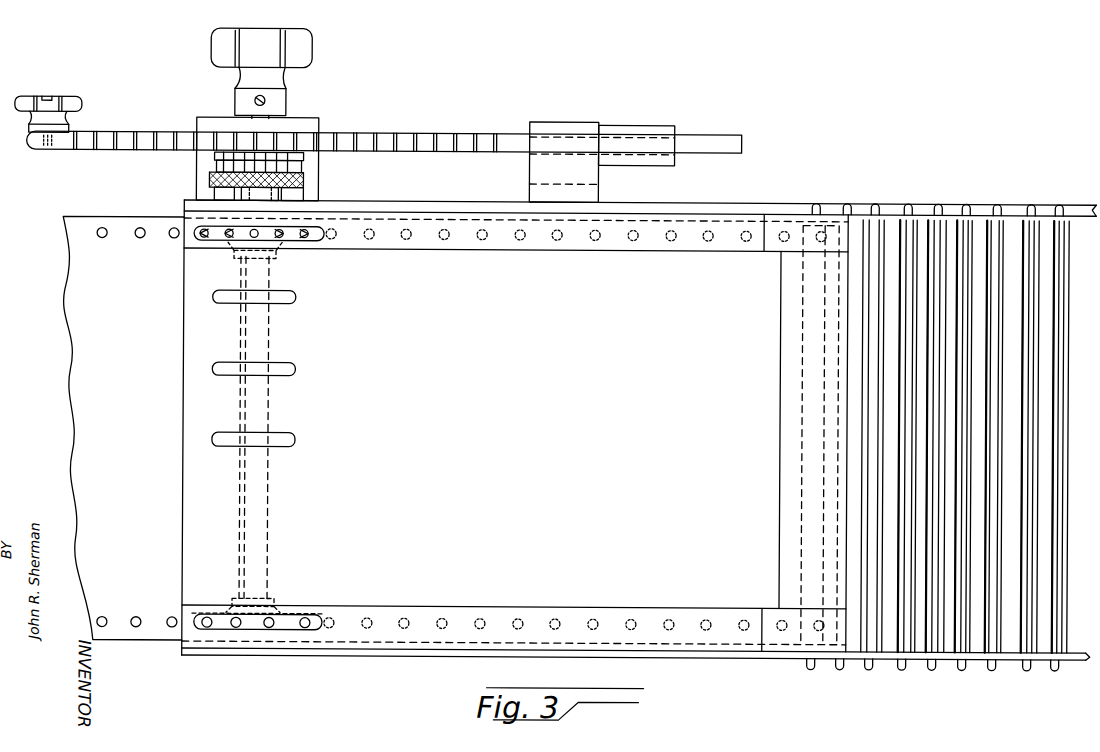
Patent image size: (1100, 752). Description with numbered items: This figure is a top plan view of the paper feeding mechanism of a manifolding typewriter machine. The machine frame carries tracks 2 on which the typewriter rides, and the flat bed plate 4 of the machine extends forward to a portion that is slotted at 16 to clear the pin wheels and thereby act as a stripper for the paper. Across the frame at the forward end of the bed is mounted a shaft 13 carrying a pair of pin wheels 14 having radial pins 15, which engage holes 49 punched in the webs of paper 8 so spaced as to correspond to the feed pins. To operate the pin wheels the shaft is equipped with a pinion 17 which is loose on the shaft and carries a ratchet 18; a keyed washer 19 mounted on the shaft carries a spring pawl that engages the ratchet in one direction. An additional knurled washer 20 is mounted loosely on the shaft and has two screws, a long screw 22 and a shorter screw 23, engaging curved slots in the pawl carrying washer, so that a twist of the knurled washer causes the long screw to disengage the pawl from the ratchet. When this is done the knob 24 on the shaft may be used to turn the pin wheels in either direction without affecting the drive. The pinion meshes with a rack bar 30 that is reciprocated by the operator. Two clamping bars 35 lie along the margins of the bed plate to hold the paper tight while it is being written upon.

The tracks 2 is at (688, 658).
The bed plate 4 is at (500, 585).
The webs of paper 8 is at (92, 379).
The shaft 13 is at (268, 521).
The pin wheels 14 is at (290, 625).
The radial pins 15 is at (268, 625).
The slot 16 is at (285, 618).
The pinion 17 is at (268, 140).
The ratchet 18 is at (283, 153).
The keyed washer 19 is at (290, 164).
The knurled washer 20 is at (303, 180).
The long screw 22 is at (212, 190).
The short screw 23 is at (302, 192).
The knob 24 is at (209, 48).
The rack bar 30 is at (402, 142).
The clamping bars 35 is at (509, 250).
The holes 49 is at (171, 240).